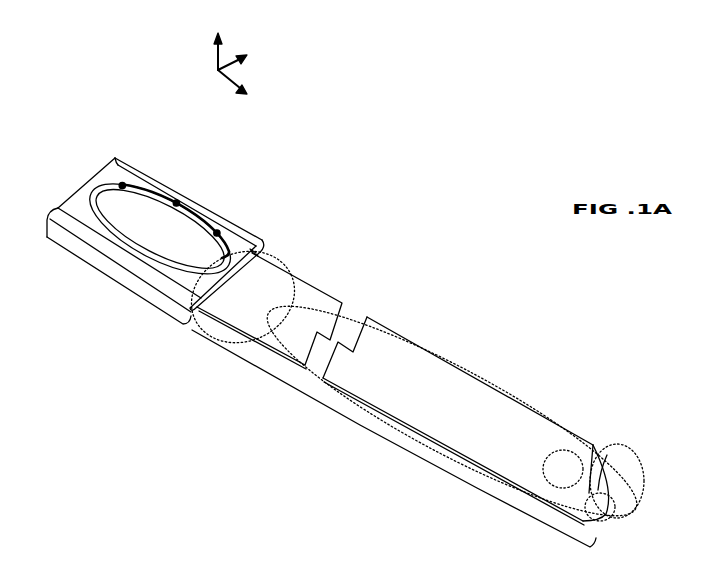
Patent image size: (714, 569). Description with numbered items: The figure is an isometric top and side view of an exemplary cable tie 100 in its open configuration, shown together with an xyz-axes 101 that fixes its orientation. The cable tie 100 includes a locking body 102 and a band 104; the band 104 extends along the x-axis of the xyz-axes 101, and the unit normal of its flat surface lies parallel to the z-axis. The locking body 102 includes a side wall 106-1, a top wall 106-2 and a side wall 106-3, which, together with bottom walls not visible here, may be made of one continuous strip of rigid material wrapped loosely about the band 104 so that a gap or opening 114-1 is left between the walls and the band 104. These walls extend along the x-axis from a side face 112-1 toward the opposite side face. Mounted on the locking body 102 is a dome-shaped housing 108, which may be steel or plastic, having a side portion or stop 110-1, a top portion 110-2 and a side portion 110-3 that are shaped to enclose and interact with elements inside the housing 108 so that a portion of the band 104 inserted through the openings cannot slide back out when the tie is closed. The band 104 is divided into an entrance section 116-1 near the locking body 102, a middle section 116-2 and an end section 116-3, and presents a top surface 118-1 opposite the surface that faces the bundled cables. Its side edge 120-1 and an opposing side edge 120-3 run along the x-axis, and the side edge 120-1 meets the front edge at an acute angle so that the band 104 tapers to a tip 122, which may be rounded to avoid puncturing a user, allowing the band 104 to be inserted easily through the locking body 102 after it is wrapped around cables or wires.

The cable tie 100 is at (502, 104).
The xyz-axes 101 is at (216, 69).
The locking body 102 is at (91, 289).
The band 104 is at (360, 428).
The side wall 106-1 is at (62, 237).
The top wall 106-2 is at (77, 210).
The side wall 106-3 is at (143, 172).
The housing 108 is at (152, 252).
The side portion (stop) 110-1 is at (218, 234).
The top portion 110-2 is at (175, 260).
The side portion 110-3 is at (122, 186).
The side face 112-1 is at (266, 240).
The gap/opening 114-1 is at (256, 252).
The entrance section 116-1 is at (300, 262).
The middle section 116-2 is at (393, 308).
The end section 116-3 is at (567, 457).
The top surface of band 118-1 is at (452, 405).
The side edge 120-1 is at (488, 490).
The side edge 120-3 is at (607, 455).
The tip 122 is at (593, 445).